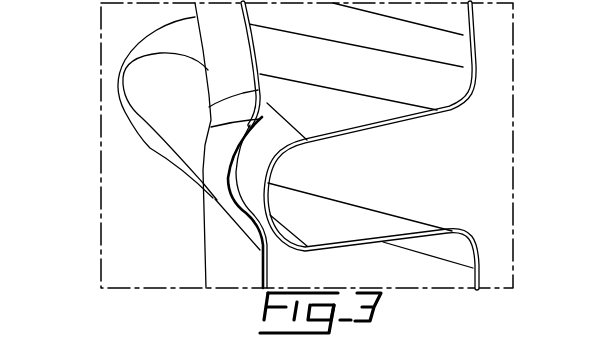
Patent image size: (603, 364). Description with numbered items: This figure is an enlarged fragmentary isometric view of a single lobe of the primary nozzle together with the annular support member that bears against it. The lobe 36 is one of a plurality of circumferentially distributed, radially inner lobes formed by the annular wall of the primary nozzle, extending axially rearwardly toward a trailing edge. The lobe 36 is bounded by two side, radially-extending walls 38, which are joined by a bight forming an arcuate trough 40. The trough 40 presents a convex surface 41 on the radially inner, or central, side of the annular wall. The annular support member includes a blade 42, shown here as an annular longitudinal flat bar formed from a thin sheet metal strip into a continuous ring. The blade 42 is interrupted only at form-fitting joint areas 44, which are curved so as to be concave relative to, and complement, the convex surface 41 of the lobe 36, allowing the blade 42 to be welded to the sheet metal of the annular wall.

The radially inner lobe 36 is at (444, 122).
The side wall 38 is at (410, 122).
The arcuate trough 40 is at (275, 212).
The convex surface 41 is at (215, 192).
The annular blade 42 is at (212, 66).
The form-fitting joint area 44 is at (215, 163).